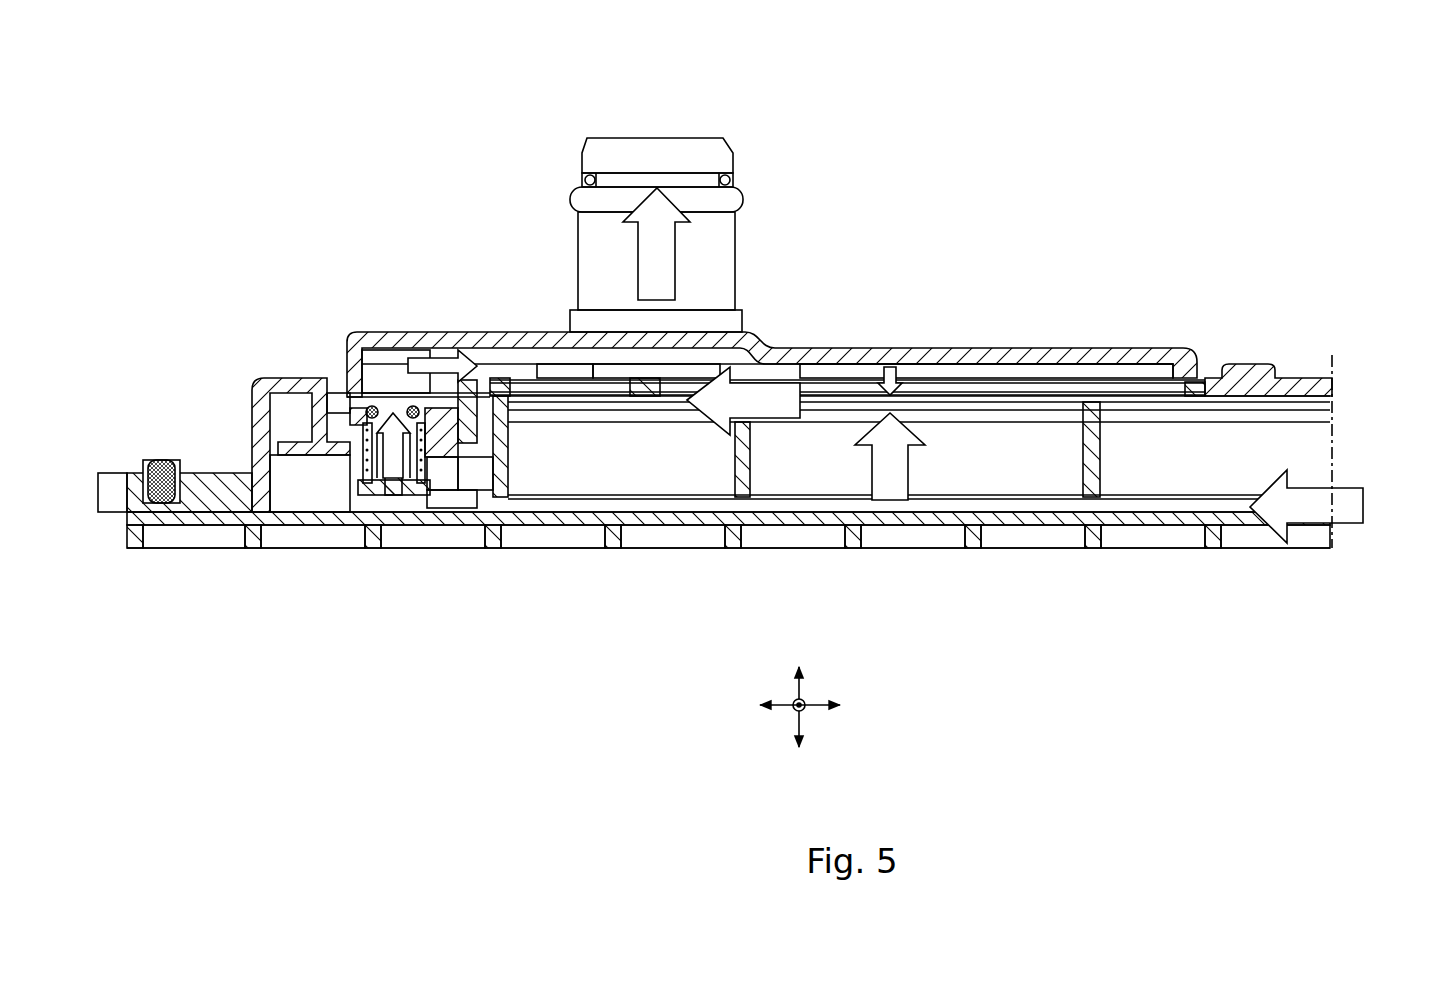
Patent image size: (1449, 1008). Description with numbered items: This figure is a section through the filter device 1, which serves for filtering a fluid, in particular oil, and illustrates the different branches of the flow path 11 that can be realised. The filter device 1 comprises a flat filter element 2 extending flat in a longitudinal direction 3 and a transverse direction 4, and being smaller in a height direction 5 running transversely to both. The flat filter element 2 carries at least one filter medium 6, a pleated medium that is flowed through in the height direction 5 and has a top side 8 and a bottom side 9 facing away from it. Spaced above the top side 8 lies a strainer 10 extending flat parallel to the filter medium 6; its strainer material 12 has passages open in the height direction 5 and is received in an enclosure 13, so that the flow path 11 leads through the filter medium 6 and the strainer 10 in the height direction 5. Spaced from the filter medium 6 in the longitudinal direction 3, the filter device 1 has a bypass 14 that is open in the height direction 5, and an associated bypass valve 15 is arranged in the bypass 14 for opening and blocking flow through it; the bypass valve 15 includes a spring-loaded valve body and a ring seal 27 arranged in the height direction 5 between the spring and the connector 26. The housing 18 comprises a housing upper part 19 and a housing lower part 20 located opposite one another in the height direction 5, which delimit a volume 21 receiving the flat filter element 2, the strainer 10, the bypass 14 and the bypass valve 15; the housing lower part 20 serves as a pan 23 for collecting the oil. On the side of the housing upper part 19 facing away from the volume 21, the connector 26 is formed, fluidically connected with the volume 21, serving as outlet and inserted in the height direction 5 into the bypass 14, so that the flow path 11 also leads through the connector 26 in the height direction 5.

The filter device 1 is at (1172, 185).
The flat filter element 2 is at (1345, 442).
The longitudinal direction 3 is at (797, 706).
The transverse direction 4 is at (818, 706).
The height direction 5 is at (800, 683).
The filter medium 6 is at (1155, 504).
The top side 8 is at (1030, 420).
The bottom side 9 is at (1040, 500).
The strainer 10 is at (1210, 360).
The flow path 11 is at (650, 258).
The strainer material 12 is at (1115, 388).
The enclosure 13 is at (1228, 377).
The bypass 14 is at (359, 467).
The bypass valve 15 is at (397, 489).
The housing 18 is at (214, 440).
The housing upper part 19 is at (249, 384).
The housing lower part 20 is at (253, 552).
The volume 21 is at (288, 498).
The pan 23 is at (728, 603).
The connector 26 is at (578, 322).
The ring seal 27 is at (368, 407).